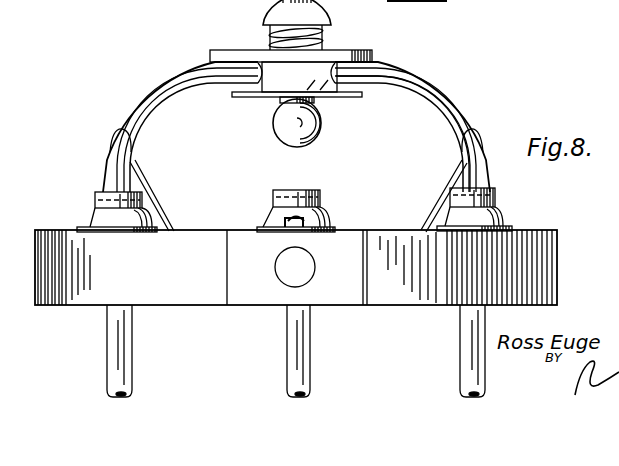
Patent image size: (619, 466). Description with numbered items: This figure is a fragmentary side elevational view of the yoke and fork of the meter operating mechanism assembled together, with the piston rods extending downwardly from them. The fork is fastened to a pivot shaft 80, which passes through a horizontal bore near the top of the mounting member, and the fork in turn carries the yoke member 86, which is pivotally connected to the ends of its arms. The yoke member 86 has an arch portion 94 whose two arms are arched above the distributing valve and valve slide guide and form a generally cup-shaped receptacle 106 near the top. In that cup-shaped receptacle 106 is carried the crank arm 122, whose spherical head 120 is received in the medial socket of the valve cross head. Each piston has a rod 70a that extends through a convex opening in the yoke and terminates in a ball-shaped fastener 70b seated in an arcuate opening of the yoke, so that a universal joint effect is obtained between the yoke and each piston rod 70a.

The yoke member 86 is at (152, 86).
The arch portion 94 is at (413, 88).
The cup-shaped receptacle 106 is at (358, 52).
The crank arm 122 is at (316, 18).
The spherical head 120 is at (278, 123).
The ball-shaped fastener 70b is at (146, 217).
The pivot shaft 80 is at (304, 272).
The piston rod 70a is at (122, 348).